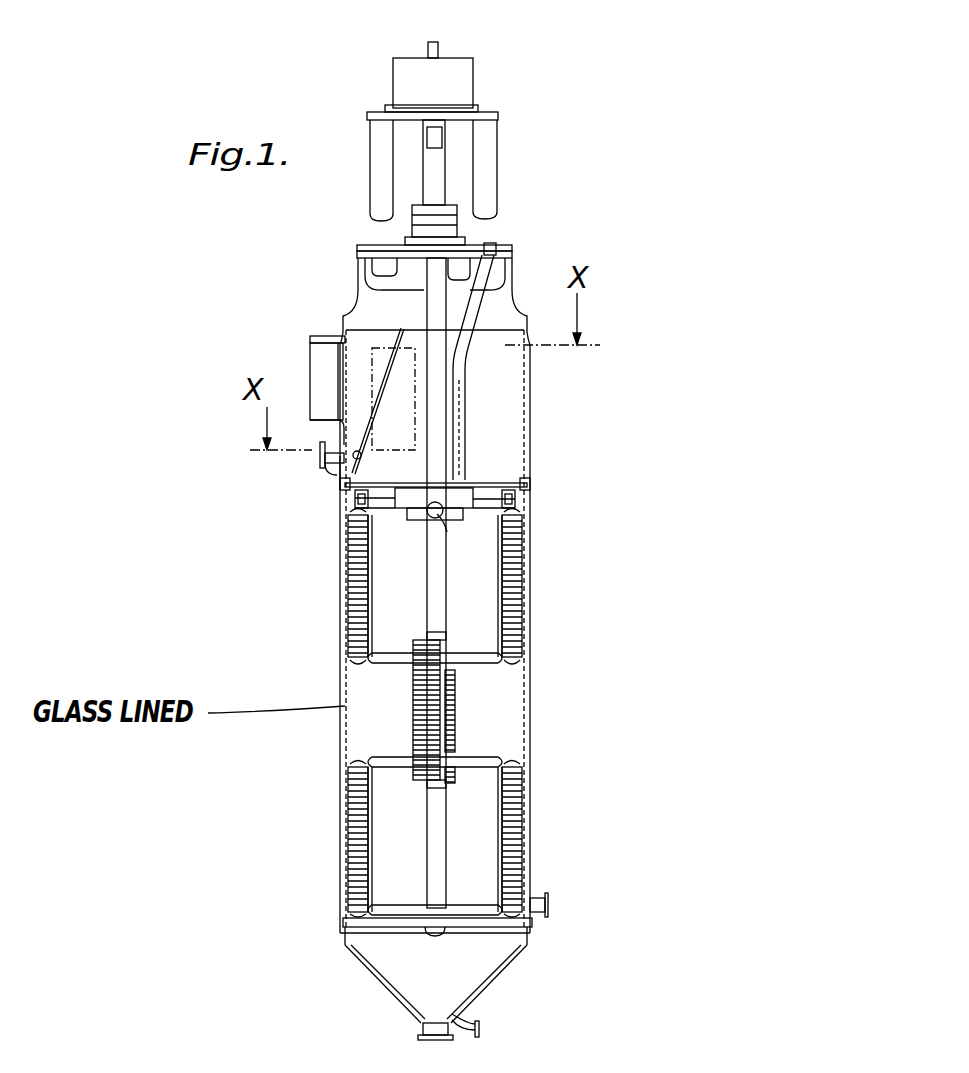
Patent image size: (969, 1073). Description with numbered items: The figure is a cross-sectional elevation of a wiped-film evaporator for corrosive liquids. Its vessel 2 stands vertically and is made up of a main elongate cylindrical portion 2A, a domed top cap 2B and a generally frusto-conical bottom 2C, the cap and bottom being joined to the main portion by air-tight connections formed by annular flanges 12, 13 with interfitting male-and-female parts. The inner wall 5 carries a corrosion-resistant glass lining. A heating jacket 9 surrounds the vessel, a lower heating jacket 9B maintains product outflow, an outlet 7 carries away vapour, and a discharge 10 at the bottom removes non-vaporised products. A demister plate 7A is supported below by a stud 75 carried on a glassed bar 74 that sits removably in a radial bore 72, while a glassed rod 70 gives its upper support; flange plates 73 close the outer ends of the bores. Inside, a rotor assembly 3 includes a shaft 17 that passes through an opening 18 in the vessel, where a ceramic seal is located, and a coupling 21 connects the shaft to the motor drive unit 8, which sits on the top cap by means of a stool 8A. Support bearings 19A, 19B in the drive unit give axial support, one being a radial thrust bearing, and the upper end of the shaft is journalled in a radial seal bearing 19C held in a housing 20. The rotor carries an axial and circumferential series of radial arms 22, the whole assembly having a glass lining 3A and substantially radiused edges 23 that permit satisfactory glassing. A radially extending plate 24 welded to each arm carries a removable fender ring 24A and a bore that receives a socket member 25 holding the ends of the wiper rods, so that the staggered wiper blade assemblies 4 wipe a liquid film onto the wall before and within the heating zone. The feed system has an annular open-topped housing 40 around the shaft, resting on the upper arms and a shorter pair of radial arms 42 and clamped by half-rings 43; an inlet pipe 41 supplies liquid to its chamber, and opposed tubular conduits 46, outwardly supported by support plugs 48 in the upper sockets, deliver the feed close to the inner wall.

The vessel 2 is at (532, 718).
The main elongate cylindrical portion 2A is at (533, 818).
The domed top cap 2B is at (532, 398).
The frusto-conical bottom 2C is at (530, 946).
The rotor assembly 3 is at (418, 442).
The glass lining 3A is at (404, 582).
The wiper blade assemblies 4 is at (368, 619).
The inner wall 5 is at (355, 712).
The outlet 7 is at (312, 380).
The demister plate 7A is at (330, 442).
The drive unit 8 is at (455, 95).
The stool 8A is at (376, 200).
The heating jacket 9 is at (336, 614).
The lower heating jacket 9B is at (378, 982).
The discharge 10 is at (420, 1030).
The annular flange 12 is at (532, 482).
The annular flange 13 is at (530, 496).
The shaft 17 is at (468, 414).
The opening 18 is at (372, 298).
The support bearing 19A is at (440, 42).
The radial thrust bearing 19B is at (418, 124).
The radial seal bearing 19C is at (466, 234).
The housing 20 is at (452, 212).
The coupling 21 is at (442, 135).
The radial arms 22 is at (375, 520).
The radiused edges 23 is at (436, 938).
The radially extending plate 24 is at (336, 572).
The fender ring 24A is at (338, 566).
The socket member 25 is at (345, 740).
The annular open-topped housing 40 is at (428, 450).
The inlet pipe 41 is at (468, 440).
The radial arms 42 is at (440, 517).
The half-rings 43 is at (447, 532).
The tubular conduits 46 is at (497, 478).
The support plugs 48 is at (355, 500).
The glassed rod 70 is at (356, 345).
The radial bore 72 is at (340, 482).
The flange plates 73 is at (324, 460).
The glassed bar 74 is at (335, 478).
The stud 75 is at (360, 461).